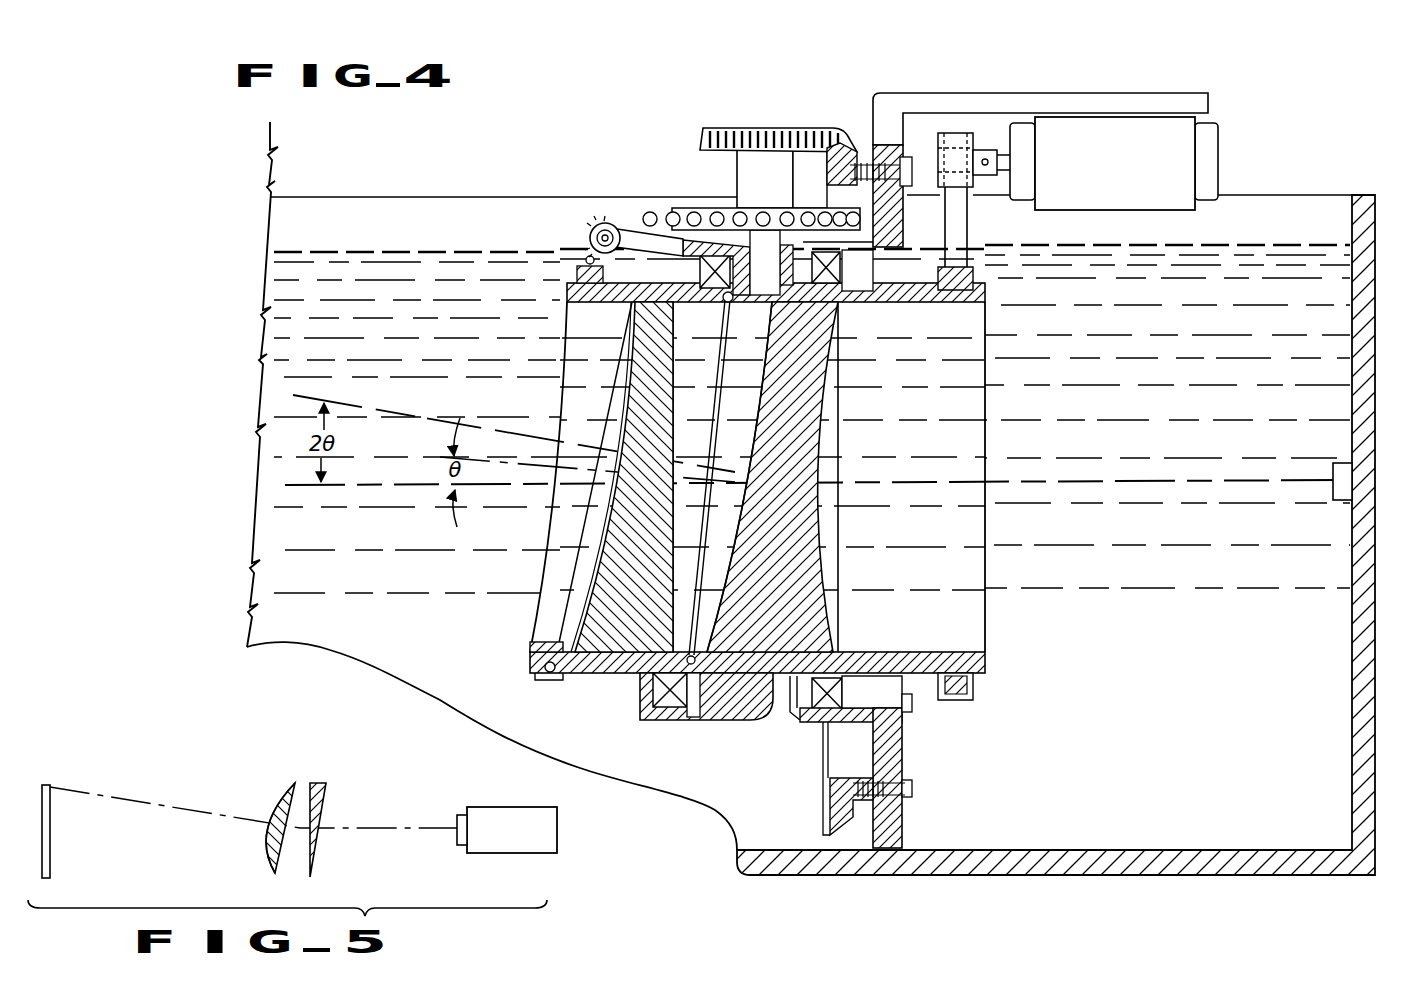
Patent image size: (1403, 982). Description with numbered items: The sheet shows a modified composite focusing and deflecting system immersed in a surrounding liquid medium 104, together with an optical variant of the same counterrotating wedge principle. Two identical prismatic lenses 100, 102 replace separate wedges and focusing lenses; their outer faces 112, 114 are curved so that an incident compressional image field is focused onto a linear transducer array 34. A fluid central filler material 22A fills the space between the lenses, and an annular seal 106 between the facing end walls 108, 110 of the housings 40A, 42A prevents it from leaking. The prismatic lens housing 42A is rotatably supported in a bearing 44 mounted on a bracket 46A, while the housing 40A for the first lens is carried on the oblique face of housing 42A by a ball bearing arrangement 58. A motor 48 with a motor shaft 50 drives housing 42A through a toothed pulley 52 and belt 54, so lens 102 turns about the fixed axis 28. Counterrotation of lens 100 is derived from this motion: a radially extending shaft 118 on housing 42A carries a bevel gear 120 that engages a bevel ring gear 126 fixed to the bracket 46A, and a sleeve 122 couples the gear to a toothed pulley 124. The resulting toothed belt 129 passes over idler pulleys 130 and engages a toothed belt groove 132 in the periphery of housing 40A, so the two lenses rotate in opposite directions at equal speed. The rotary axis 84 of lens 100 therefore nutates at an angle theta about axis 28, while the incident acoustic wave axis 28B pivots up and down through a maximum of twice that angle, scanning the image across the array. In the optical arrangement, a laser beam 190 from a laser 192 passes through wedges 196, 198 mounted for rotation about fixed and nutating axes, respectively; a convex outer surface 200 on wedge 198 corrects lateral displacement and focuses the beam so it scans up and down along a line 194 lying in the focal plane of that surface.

In FIG. 4, the fluid central filler material 22A is at (697, 349).
In FIG. 4, the fixed axis 28 is at (1090, 480).
In FIG. 4, the incident acoustic wave axis 28B is at (360, 406).
In FIG. 4, the linear transducer array 34 is at (1330, 470).
In FIG. 4, the housing for first lens element 40A is at (592, 665).
In FIG. 4, the prismatic lens housing 42A is at (985, 295).
In FIG. 4, the bearing 44 is at (840, 262).
In FIG. 4, the bracket 46A is at (887, 118).
In FIG. 4, the motor 48 is at (1138, 200).
In FIG. 4, the motor shaft 50 is at (1003, 150).
In FIG. 4, the toothed pulley 52 is at (940, 135).
In FIG. 4, the belt 54 is at (958, 140).
In FIG. 4, the ball bearing arrangement 58 is at (670, 705).
In FIG. 4, the movable axis 84 is at (503, 458).
In FIG. 4, the prismatic lens 100 is at (605, 565).
In FIG. 4, the prismatic lens 102 is at (805, 565).
In FIG. 4, the surrounding liquid medium 104 is at (320, 632).
In FIG. 4, the annular seal 106 is at (782, 345).
In FIG. 4, the end wall 108 is at (728, 320).
In FIG. 4, the end wall 110 is at (705, 705).
In FIG. 4, the outer face 112 is at (628, 407).
In FIG. 4, the outer face 114 is at (828, 407).
In FIG. 4, the radially extending shaft 118 is at (729, 303).
In FIG. 4, the bevel gear 120 is at (705, 135).
In FIG. 4, the sleeve 122 is at (745, 168).
In FIG. 4, the toothed pulley 124 is at (685, 212).
In FIG. 4, the bevel ring gear 126 is at (852, 140).
In FIG. 4, the toothed belt 129 is at (643, 217).
In FIG. 4, the idler pulleys 130 is at (605, 215).
In FIG. 4, the toothed belt groove 132 is at (538, 664).
In FIG. 5, the laser beam 190 is at (415, 828).
In FIG. 5, the laser 192 is at (512, 807).
In FIG. 5, the line 194 is at (50, 808).
In FIG. 5, the wedge 196 is at (322, 783).
In FIG. 5, the wedge 198 is at (287, 783).
In FIG. 5, the convex outer surface 200 is at (262, 805).